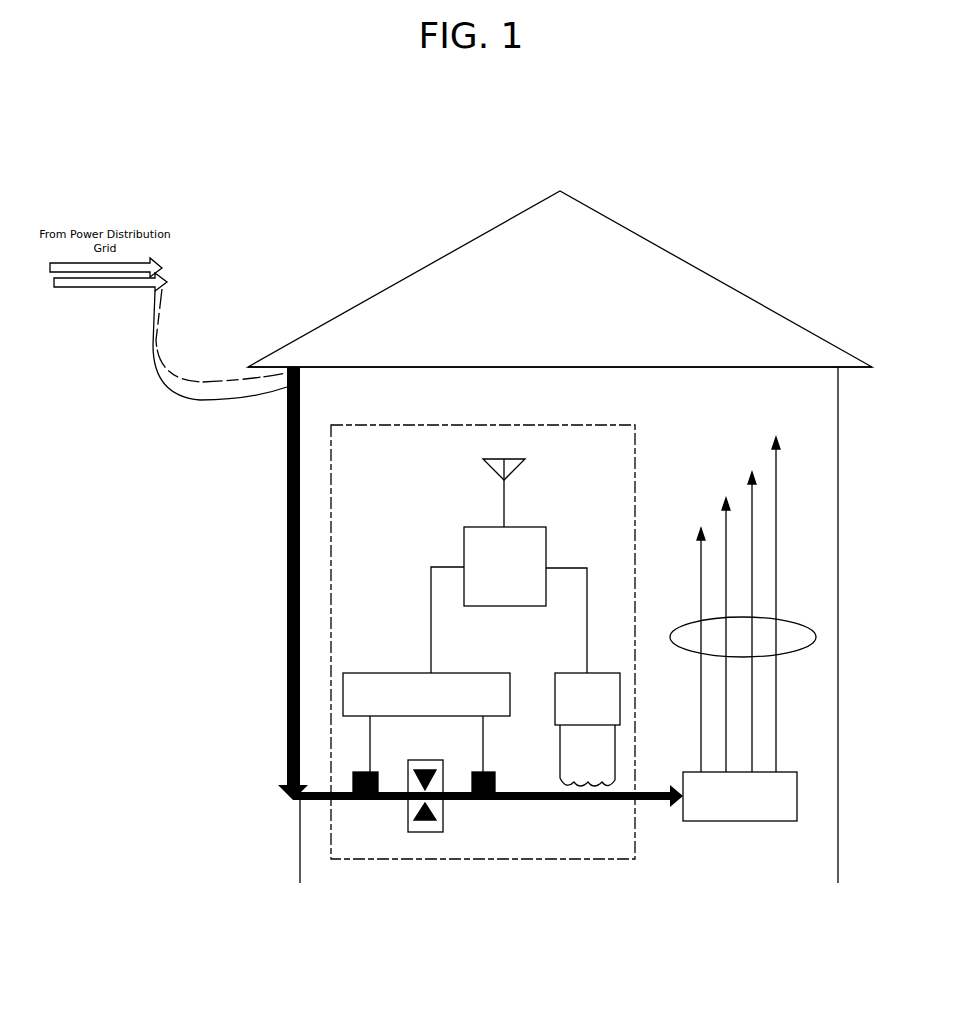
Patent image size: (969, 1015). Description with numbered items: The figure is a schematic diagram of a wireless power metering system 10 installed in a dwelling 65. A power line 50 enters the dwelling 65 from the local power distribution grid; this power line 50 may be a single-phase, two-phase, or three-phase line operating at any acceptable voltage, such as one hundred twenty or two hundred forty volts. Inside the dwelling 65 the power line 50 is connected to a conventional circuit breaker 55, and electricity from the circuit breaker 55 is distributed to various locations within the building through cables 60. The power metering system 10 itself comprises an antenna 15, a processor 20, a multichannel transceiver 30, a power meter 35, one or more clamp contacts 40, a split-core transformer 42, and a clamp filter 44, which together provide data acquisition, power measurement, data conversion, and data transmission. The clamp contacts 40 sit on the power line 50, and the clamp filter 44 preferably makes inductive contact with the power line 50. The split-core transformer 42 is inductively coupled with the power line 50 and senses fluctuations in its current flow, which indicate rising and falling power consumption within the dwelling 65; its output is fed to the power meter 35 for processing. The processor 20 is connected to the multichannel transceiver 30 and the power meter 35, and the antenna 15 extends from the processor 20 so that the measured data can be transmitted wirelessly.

The wireless power metering system 10 is at (460, 425).
The antenna 15 is at (494, 459).
The processor 20 is at (478, 527).
The multichannel transceiver 30 is at (410, 673).
The power meter 35 is at (572, 673).
The clamp contacts 40 is at (378, 785).
The split-core transformer 42 is at (573, 778).
The clamp filter 44 is at (430, 832).
The power line 50 is at (287, 555).
The circuit breaker 55 is at (743, 821).
The cables 60 is at (675, 630).
The dwelling 65 is at (754, 270).